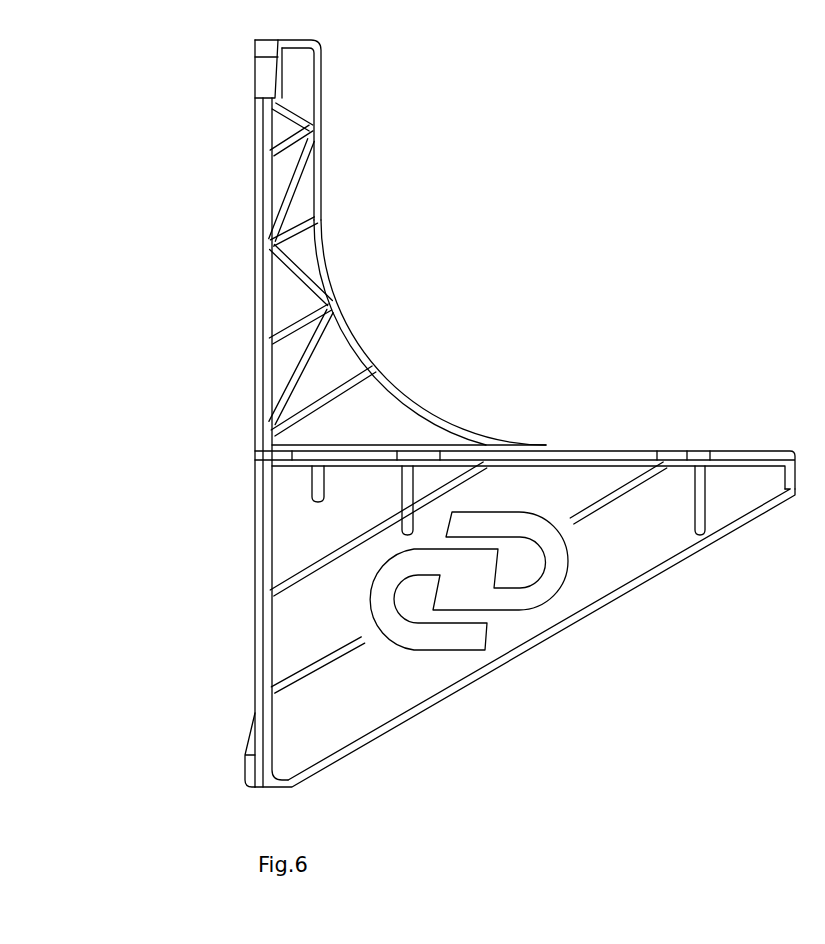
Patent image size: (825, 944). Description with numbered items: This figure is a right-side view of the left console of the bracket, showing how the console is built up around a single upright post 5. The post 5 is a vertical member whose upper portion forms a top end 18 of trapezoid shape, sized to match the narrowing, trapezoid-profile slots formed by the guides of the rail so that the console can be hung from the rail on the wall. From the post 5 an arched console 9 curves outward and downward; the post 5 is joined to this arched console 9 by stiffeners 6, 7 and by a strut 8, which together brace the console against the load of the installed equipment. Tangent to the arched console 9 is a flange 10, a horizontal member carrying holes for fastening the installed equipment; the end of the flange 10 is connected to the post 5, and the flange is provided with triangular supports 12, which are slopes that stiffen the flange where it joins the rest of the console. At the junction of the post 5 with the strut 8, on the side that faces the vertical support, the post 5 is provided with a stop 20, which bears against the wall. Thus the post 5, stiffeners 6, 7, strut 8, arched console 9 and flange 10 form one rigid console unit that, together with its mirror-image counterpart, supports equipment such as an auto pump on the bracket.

The post 5 is at (258, 388).
The stiffener 6 is at (295, 267).
The stiffener 7 is at (310, 668).
The strut 8 is at (470, 680).
The arched console 9 is at (400, 393).
The flange 10 is at (300, 457).
The triangular support 12 is at (408, 482).
The top end of the post 18 is at (258, 75).
The stop 20 is at (248, 767).